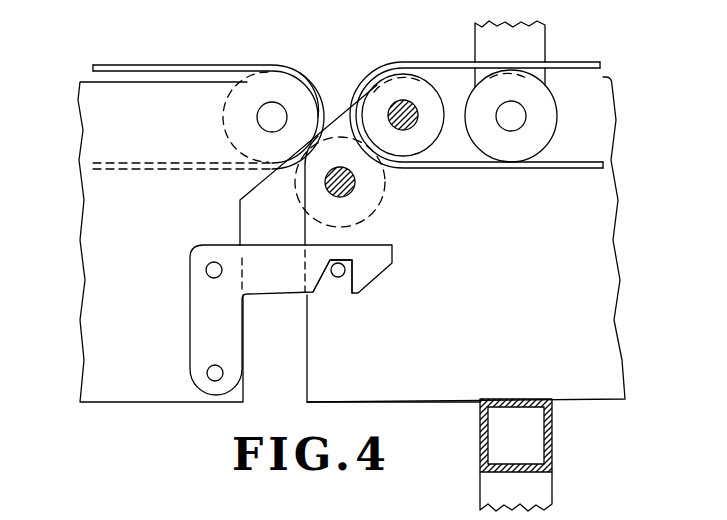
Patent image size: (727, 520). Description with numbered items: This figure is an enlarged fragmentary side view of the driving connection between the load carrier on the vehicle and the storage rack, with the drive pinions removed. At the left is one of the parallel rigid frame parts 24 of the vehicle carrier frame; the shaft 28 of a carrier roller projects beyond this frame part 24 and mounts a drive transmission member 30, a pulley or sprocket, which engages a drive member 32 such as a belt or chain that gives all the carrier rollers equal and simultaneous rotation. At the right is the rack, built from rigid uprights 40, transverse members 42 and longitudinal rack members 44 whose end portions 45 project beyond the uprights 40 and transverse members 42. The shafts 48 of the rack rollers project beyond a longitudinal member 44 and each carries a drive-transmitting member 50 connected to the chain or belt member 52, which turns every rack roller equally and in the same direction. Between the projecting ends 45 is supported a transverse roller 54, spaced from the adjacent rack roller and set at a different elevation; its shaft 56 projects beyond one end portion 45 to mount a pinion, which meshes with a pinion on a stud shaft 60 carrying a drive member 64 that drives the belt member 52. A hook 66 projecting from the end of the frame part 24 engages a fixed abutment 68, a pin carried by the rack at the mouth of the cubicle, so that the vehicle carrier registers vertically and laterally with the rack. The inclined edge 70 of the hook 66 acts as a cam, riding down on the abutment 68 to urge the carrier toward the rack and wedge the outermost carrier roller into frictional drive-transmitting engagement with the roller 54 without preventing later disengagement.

The frame part 24 is at (102, 292).
The shaft 28 is at (260, 117).
The drive transmission member 30 is at (281, 71).
The drive member 32 is at (218, 65).
The upright 40 is at (535, 44).
The transverse member 42 is at (553, 438).
The longitudinal rack member 44 is at (615, 338).
The end portion 45 is at (418, 393).
The shaft 48 is at (517, 117).
The drive-transmitting member 50 is at (530, 147).
The drive-transmitting member 52 is at (440, 62).
The transverse roller 54 is at (300, 190).
The shaft 56 is at (347, 190).
The stud shaft 60 is at (406, 125).
The drive member 64 is at (430, 142).
The hook 66 is at (372, 278).
The abutment 68 is at (340, 277).
The inclined edge 70 is at (322, 282).